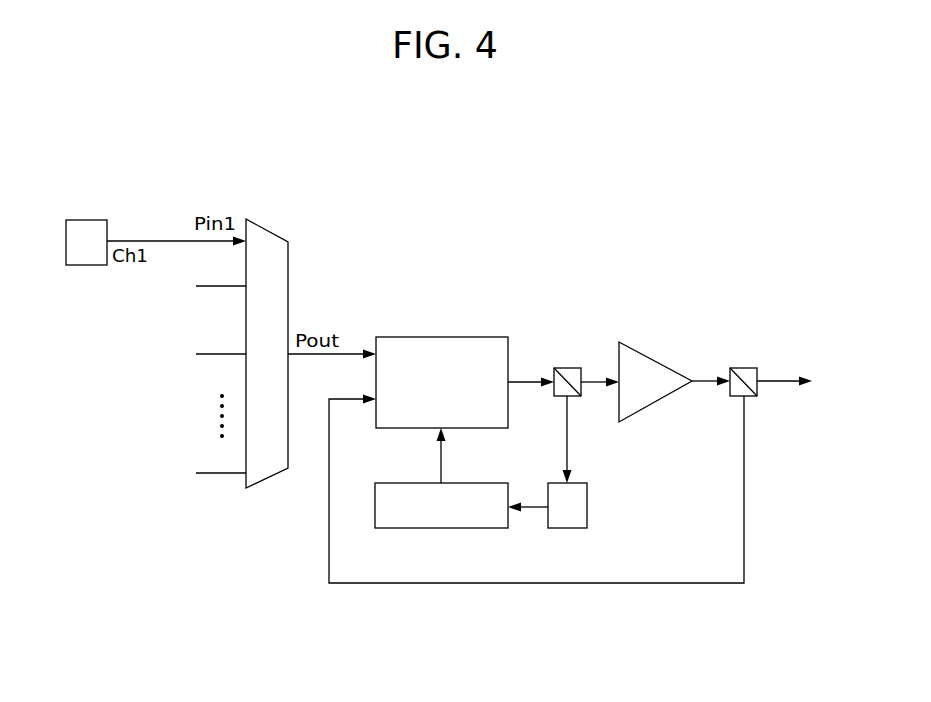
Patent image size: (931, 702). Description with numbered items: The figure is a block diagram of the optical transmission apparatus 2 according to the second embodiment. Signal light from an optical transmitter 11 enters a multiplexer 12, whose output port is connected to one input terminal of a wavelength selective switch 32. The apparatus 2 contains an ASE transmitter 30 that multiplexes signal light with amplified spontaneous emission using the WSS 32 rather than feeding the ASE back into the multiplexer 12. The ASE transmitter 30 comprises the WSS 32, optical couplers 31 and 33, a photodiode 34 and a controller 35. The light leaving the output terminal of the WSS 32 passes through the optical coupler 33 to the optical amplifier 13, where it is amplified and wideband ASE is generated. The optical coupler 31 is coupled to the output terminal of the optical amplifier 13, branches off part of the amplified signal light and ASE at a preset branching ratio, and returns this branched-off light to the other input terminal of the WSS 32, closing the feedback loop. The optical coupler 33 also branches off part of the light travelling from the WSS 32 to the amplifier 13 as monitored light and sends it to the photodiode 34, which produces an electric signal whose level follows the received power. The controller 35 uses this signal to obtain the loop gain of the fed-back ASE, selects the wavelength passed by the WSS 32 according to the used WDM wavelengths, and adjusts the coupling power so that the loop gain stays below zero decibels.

The optical transmission apparatus 2 is at (168, 145).
The optical transmitter 11 is at (83, 220).
The multiplexer 12 is at (267, 228).
The optical amplifier 13 is at (648, 352).
The ASE transmitter 30 is at (400, 614).
The optical coupler 31 is at (743, 368).
The wavelength selective switch 32 is at (398, 337).
The optical coupler 33 is at (568, 368).
The photodiode 34 is at (565, 528).
The controller 35 is at (428, 528).